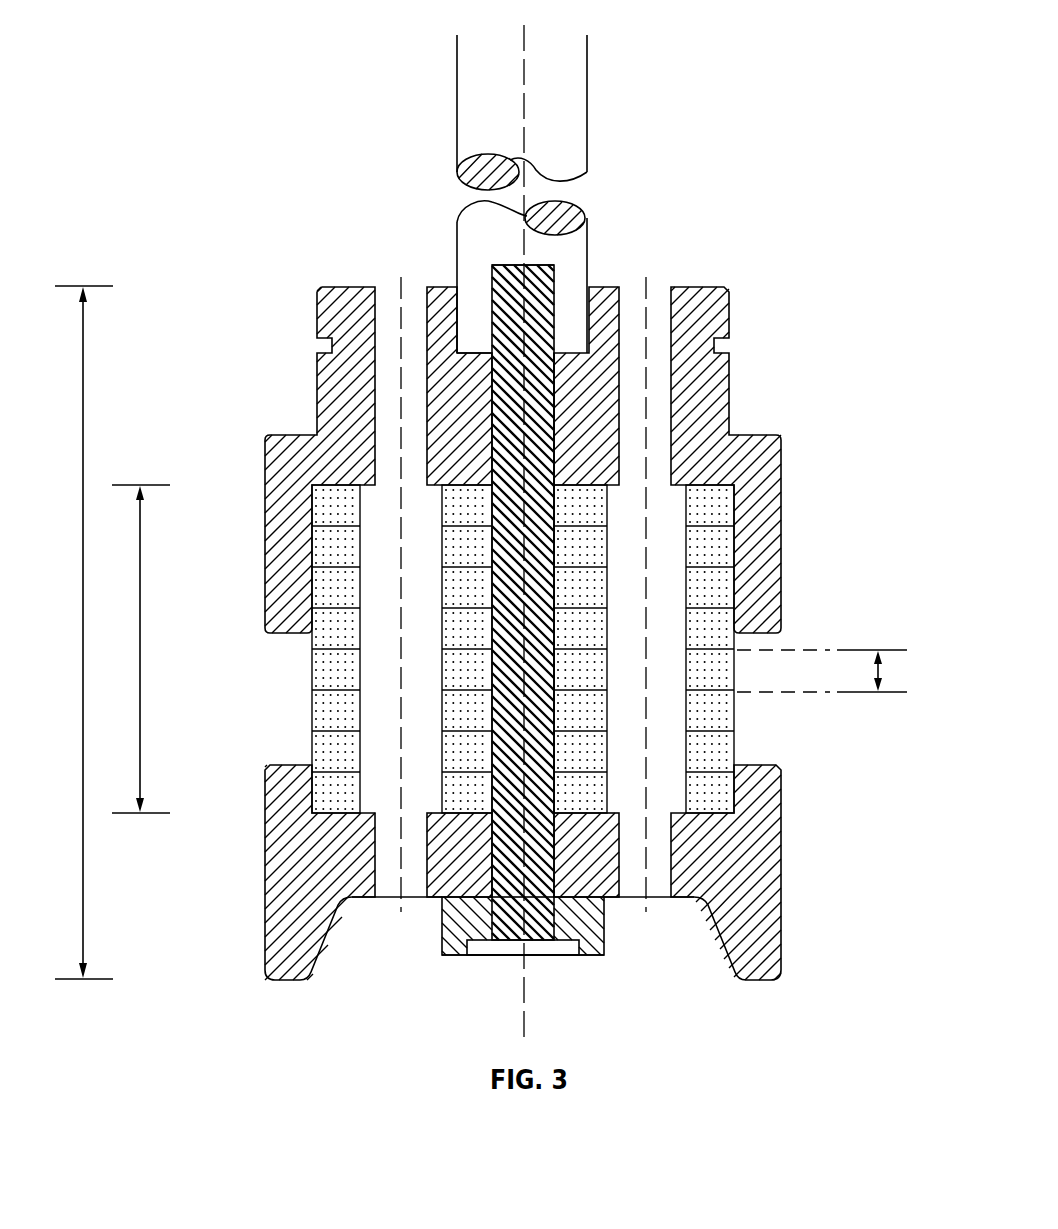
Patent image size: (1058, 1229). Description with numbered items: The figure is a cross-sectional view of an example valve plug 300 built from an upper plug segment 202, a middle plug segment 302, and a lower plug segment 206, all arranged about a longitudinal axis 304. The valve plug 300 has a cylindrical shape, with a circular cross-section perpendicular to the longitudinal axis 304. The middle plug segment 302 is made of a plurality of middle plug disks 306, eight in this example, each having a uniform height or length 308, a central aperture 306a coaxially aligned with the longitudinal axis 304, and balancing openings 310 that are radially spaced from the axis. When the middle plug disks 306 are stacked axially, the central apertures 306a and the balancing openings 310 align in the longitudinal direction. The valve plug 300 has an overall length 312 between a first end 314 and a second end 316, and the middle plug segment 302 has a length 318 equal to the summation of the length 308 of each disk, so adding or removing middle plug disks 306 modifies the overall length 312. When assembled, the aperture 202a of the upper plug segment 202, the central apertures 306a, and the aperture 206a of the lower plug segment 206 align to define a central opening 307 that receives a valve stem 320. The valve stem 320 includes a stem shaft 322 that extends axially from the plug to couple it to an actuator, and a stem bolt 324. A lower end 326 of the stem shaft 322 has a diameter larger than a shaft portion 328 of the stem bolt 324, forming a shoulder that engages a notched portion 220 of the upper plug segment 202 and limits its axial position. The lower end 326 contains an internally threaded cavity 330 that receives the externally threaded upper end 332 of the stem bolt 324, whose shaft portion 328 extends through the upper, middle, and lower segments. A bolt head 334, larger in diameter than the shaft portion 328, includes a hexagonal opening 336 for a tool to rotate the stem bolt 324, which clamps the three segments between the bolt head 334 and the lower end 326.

The valve plug 300 is at (783, 85).
The middle plug segment 302 is at (760, 673).
The longitudinal axis 304 is at (527, 203).
The middle plug disks 306 is at (312, 662).
The central aperture 306a is at (555, 593).
The central opening 307 is at (545, 876).
The length 308 is at (880, 668).
The balancing openings 310 is at (355, 562).
The overall length 312 is at (83, 655).
The first end 314 is at (704, 287).
The second end 316 is at (757, 980).
The length 318 is at (140, 683).
The valve stem 320 is at (606, 101).
The stem shaft 322 is at (457, 122).
The stem bolt 324 is at (594, 955).
The lower end 326 is at (470, 362).
The shaft portion 328 is at (555, 390).
The internally threaded cavity 330 is at (548, 292).
The upper end 332 is at (515, 266).
The bolt head 334 is at (442, 930).
The opening 336 is at (490, 947).
The upper plug segment 202 is at (265, 480).
The aperture 202a is at (555, 424).
The lower plug segment 206 is at (265, 888).
The aperture 206a is at (555, 890).
The notched portion 220 is at (465, 360).